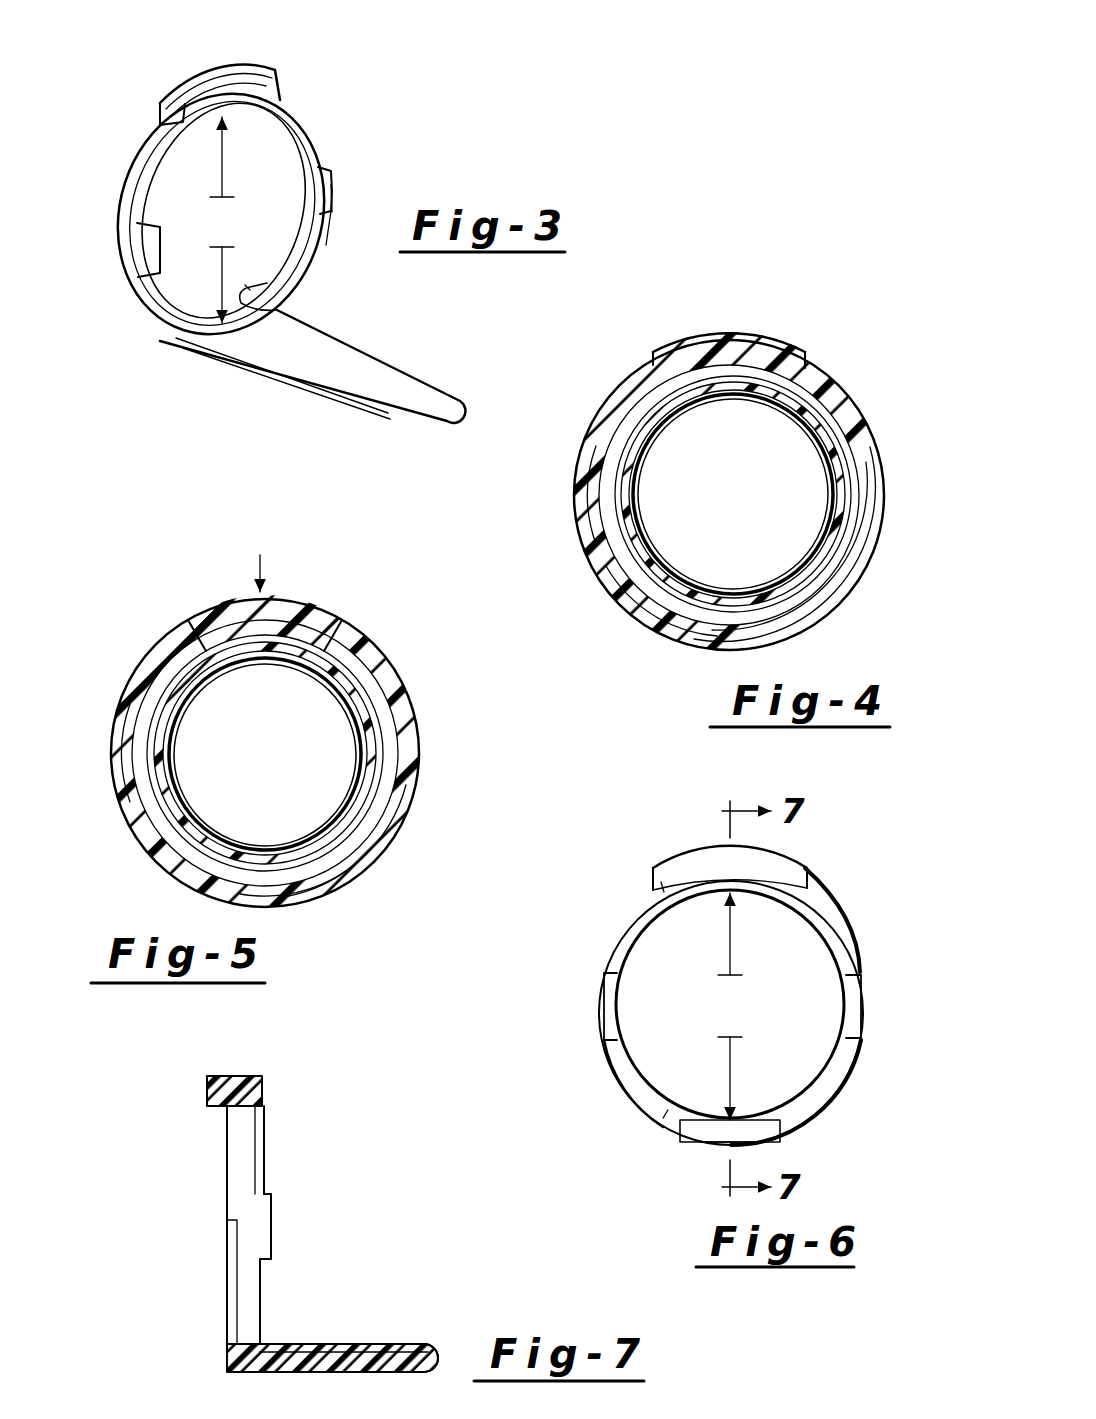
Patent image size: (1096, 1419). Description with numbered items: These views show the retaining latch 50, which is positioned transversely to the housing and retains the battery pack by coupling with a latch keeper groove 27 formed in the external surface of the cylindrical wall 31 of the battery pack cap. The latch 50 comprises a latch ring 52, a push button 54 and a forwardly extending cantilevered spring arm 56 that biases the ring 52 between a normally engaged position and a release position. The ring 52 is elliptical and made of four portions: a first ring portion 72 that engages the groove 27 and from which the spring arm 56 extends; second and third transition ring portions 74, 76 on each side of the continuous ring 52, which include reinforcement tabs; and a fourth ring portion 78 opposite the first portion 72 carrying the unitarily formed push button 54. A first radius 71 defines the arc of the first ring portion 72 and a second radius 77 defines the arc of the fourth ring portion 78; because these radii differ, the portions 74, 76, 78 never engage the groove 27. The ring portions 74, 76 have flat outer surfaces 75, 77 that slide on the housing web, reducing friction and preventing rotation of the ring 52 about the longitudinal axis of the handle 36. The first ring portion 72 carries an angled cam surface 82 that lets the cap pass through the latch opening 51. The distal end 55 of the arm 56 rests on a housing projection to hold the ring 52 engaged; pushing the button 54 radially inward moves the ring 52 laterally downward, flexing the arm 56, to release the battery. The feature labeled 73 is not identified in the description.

In FIG. 4, the latch keeper groove 27 is at (748, 399).
In FIG. 5, the latch keeper groove 27 is at (216, 673).
In FIG. 4, the cylindrical wall 31 is at (642, 462).
In FIG. 5, the cylindrical wall 31 is at (254, 660).
In FIG. 4, the handle 36 is at (845, 409).
In FIG. 5, the handle 36 is at (136, 669).
In FIG. 3, the latch 50 is at (302, 67).
In FIG. 3, the latch opening 51 is at (329, 169).
In FIG. 3, the latch ring 52 is at (308, 100).
In FIG. 6, the latch ring 52 is at (845, 910).
In FIG. 7, the latch ring 52 is at (267, 1160).
In FIG. 3, the push button 54 is at (224, 63).
In FIG. 4, the push button 54 is at (768, 346).
In FIG. 5, the push button 54 is at (274, 620).
In FIG. 6, the push button 54 is at (791, 876).
In FIG. 7, the push button 54 is at (244, 1076).
In FIG. 6, the distal end 55 is at (715, 1134).
In FIG. 7, the distal end 55 is at (440, 1356).
In FIG. 3, the spring arm 56 is at (349, 367).
In FIG. 6, the spring arm 56 is at (812, 1124).
In FIG. 7, the spring arm 56 is at (320, 1348).
In FIG. 3, the first radius 71 is at (245, 285).
In FIG. 6, the first radius 71 is at (731, 1077).
In FIG. 3, the first ring portion 72 is at (226, 157).
In FIG. 4, the first ring portion 72 is at (694, 625).
In FIG. 5, the first ring portion 72 is at (317, 867).
In FIG. 6, the first ring portion 72 is at (663, 1118).
In FIG. 6, the slot 73 is at (601, 1010).
In FIG. 3, the second ring portion 74 is at (323, 229).
In FIG. 4, the second ring portion 74 is at (869, 440).
In FIG. 5, the second ring portion 74 is at (385, 746).
In FIG. 6, the second ring portion 74 is at (854, 1041).
In FIG. 7, the second ring portion 74 is at (264, 1259).
In FIG. 3, the flat outer surface 75 is at (141, 249).
In FIG. 6, the flat outer surface 75 is at (866, 993).
In FIG. 3, the third ring portion 76 is at (203, 281).
In FIG. 4, the third ring portion 76 is at (599, 440).
In FIG. 5, the third ring portion 76 is at (112, 734).
In FIG. 6, the third ring portion 76 is at (597, 1029).
In FIG. 3, the second radius 77 is at (337, 198).
In FIG. 6, the second radius 77 is at (731, 940).
In FIG. 3, the fourth ring portion 78 is at (210, 128).
In FIG. 6, the fourth ring portion 78 is at (664, 892).
In FIG. 3, the angled cam surface 82 is at (241, 303).
In FIG. 4, the angled cam surface 82 is at (634, 628).
In FIG. 7, the angled cam surface 82 is at (230, 1340).